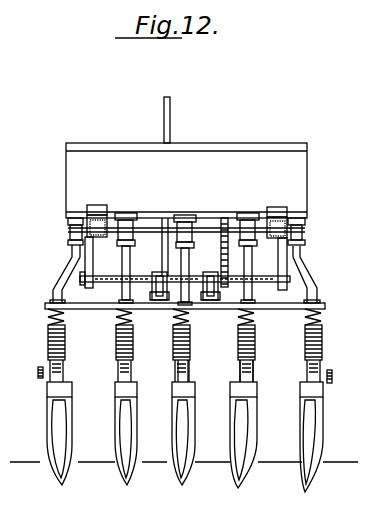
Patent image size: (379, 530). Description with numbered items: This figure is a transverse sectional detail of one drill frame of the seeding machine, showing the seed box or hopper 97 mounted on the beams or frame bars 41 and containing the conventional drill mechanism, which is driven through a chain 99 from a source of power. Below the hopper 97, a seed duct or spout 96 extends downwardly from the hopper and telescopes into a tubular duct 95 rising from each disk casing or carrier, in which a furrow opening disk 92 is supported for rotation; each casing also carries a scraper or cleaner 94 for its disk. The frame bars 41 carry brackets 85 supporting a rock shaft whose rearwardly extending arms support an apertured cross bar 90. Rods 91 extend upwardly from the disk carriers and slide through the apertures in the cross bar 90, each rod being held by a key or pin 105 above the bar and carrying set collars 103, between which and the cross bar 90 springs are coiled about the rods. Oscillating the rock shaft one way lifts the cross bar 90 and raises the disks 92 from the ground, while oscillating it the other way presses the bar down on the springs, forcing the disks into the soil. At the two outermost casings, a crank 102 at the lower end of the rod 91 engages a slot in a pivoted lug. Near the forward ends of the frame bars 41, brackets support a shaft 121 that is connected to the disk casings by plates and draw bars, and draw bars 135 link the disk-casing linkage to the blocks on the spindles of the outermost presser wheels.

The seed box or hopper 97 is at (186, 180).
The beams or frame bars 41 is at (68, 229).
The brackets 85 is at (88, 257).
The seed duct or spout 96 is at (67, 268).
The shaft 121 is at (185, 268).
The chain 99 is at (222, 259).
The key or pin 105 is at (315, 301).
The cross bar 90 is at (149, 311).
The set collars 103 is at (65, 361).
The crank 102 is at (42, 379).
The tubular duct 95 is at (237, 371).
The rods 91 is at (252, 376).
The draw bars 135 is at (332, 378).
The scraper or cleaner 94 is at (125, 466).
The furrow opening disks 92 is at (303, 488).